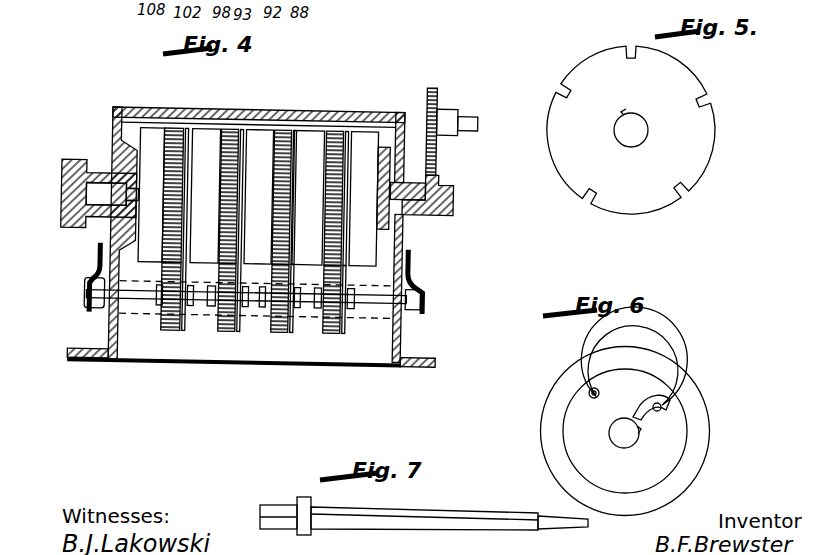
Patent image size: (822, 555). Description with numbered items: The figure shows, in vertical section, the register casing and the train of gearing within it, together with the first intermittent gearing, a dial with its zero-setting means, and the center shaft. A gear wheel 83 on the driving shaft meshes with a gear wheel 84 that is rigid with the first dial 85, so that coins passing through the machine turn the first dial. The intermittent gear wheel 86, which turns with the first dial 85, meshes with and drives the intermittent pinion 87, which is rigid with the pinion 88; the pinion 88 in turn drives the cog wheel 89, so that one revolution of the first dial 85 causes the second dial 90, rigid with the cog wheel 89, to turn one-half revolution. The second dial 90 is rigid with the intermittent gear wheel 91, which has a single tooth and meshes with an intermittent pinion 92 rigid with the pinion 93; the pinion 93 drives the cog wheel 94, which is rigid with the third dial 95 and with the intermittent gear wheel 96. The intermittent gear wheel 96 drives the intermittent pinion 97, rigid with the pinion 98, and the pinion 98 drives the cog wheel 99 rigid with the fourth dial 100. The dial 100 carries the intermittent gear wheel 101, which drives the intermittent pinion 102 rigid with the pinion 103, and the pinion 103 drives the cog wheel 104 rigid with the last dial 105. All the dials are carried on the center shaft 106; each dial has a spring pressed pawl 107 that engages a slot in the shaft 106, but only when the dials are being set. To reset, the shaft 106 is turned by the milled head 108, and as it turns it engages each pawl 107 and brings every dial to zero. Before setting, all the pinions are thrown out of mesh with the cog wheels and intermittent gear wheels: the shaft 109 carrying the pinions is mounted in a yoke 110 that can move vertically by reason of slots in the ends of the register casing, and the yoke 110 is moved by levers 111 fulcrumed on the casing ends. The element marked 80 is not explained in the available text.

In FIG. 4, the shaft 80 is at (470, 122).
In FIG. 4, the gear wheel 83 is at (433, 87).
In FIG. 4, the gear wheel 84 is at (446, 176).
In FIG. 4, the first dial 85 is at (383, 145).
In FIG. 4, the intermittent gear wheel 86 is at (354, 130).
In FIG. 5, the intermittent gear wheel 86 is at (695, 137).
In FIG. 4, the intermittent pinion 87 is at (343, 331).
In FIG. 4, the pinion 88 is at (346, 326).
In FIG. 4, the cog wheel 89 is at (348, 132).
In FIG. 4, the second dial 90 is at (334, 132).
In FIG. 4, the intermittent gear wheel 91 is at (309, 132).
In FIG. 4, the intermittent pinion 92 is at (287, 321).
In FIG. 4, the pinion 93 is at (295, 325).
In FIG. 4, the cog wheel 94 is at (293, 130).
In FIG. 4, the third dial 95 is at (283, 130).
In FIG. 4, the intermittent gear wheel 96 is at (248, 134).
In FIG. 4, the intermittent pinion 97 is at (223, 321).
In FIG. 4, the pinion 98 is at (238, 325).
In FIG. 4, the cog wheel 99 is at (231, 134).
In FIG. 4, the fourth dial 100 is at (197, 134).
In FIG. 4, the intermittent gear wheel 101 is at (186, 132).
In FIG. 4, the intermittent pinion 102 is at (171, 321).
In FIG. 4, the pinion 103 is at (186, 327).
In FIG. 4, the cog wheel 104 is at (146, 130).
In FIG. 4, the dial 105 is at (142, 135).
In FIG. 4, the shaft 106 is at (101, 172).
In FIG. 5, the shaft 106 is at (633, 143).
In FIG. 6, the shaft 106 is at (633, 443).
In FIG. 7, the shaft 106 is at (479, 512).
In FIG. 6, the spring pressed pawl 107 is at (652, 398).
In FIG. 4, the milled head 108 is at (73, 228).
In FIG. 4, the shaft 109 is at (138, 298).
In FIG. 4, the yoke 110 is at (100, 309).
In FIG. 4, the levers 111 is at (92, 275).